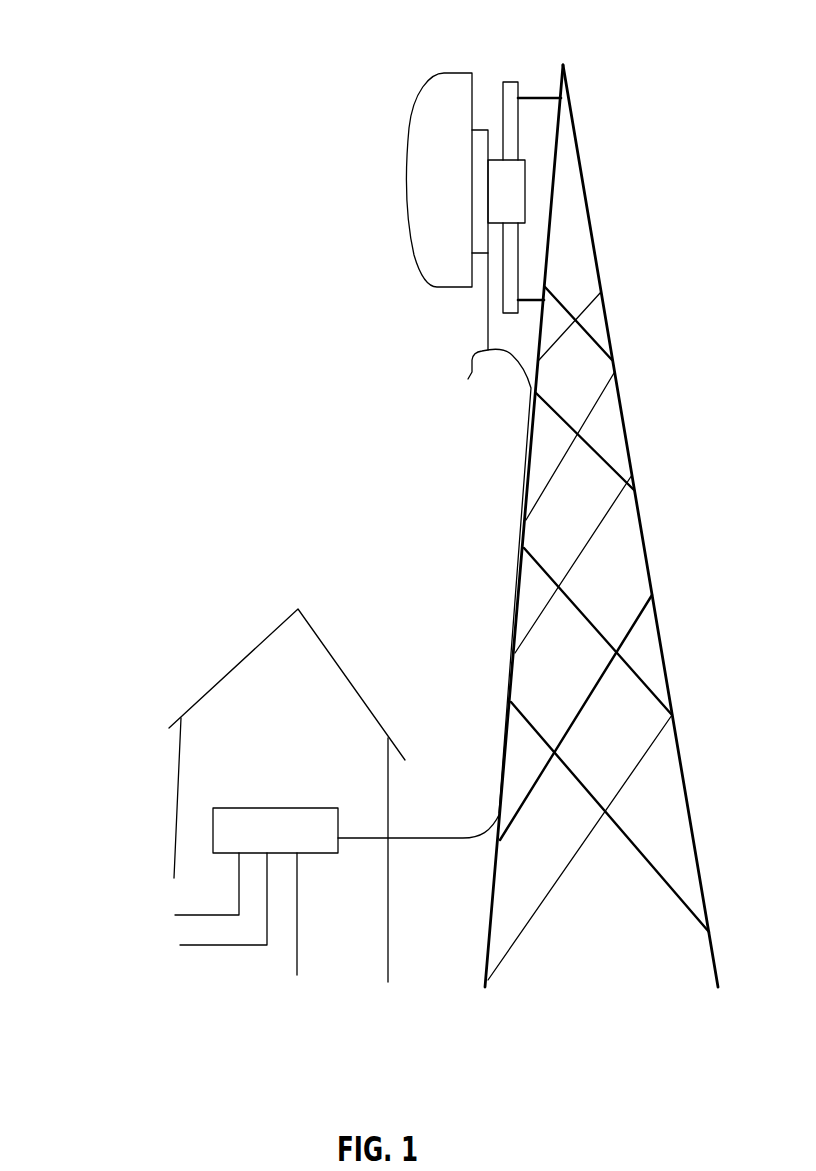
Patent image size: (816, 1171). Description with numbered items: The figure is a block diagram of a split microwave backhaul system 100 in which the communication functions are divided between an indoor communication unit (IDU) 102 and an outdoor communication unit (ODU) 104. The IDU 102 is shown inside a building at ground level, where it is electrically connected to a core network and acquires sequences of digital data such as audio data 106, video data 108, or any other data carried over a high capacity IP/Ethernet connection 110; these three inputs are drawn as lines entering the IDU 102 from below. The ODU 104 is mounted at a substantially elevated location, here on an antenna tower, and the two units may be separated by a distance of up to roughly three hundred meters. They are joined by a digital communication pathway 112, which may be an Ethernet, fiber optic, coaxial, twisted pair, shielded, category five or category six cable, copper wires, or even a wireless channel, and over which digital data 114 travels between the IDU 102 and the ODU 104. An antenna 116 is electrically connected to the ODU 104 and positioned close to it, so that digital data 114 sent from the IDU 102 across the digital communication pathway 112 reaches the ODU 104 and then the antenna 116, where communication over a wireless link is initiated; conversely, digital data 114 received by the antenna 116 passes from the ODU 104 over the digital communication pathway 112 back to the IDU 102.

The split microwave backhaul system 100 is at (158, 163).
The indoor communication unit (IDU) 102 is at (236, 808).
The outdoor communication unit (ODU) 104 is at (483, 97).
The audio data 106 is at (207, 885).
The video data 108 is at (223, 900).
The high capacity IP/Ethernet connection 110 is at (299, 950).
The digital communication pathway 112 is at (468, 379).
The digital data 114 is at (442, 826).
The antenna 116 is at (409, 117).